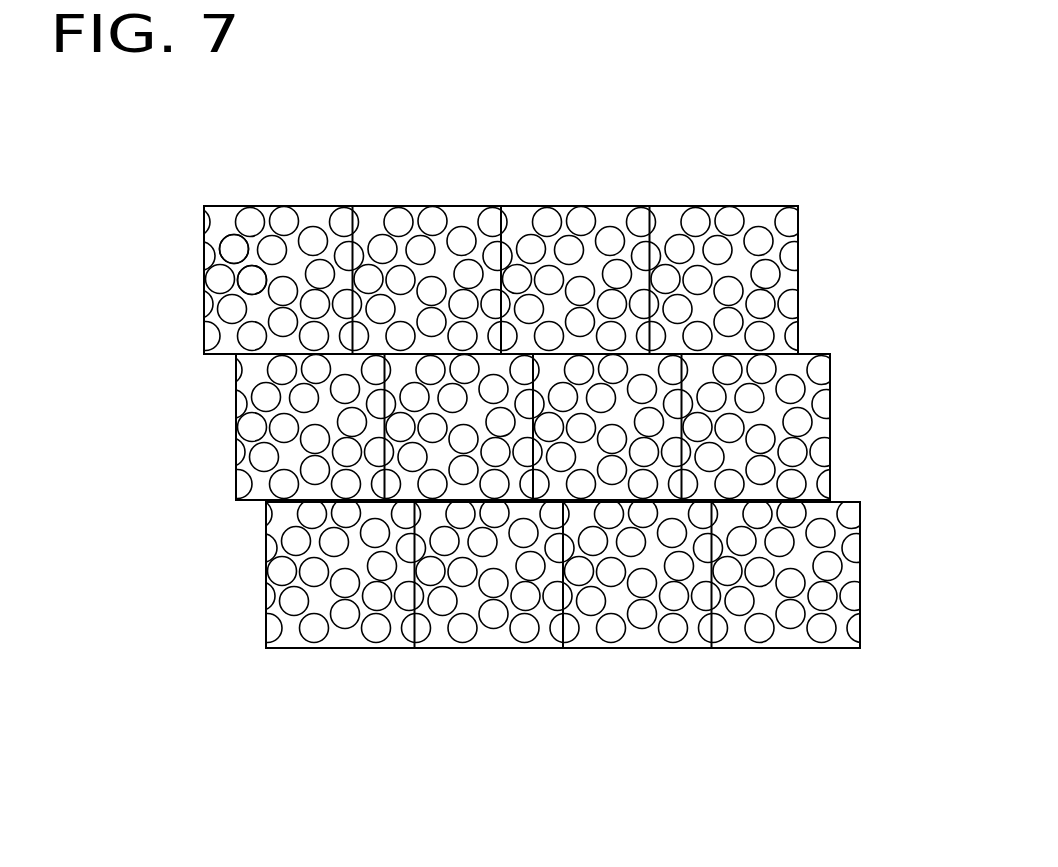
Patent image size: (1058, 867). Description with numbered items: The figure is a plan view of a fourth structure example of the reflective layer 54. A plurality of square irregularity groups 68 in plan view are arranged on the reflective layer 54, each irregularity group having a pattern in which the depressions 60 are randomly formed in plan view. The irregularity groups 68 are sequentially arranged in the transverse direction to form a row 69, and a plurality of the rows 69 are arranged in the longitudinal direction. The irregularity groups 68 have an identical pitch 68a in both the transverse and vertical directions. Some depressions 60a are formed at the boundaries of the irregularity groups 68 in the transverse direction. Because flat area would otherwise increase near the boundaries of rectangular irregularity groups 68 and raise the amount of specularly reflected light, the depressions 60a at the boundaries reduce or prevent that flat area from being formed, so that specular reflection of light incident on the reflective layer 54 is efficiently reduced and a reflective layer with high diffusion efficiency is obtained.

The reflective layer 54 is at (852, 254).
The depressions 60 is at (253, 270).
The depressions at boundaries 60a is at (702, 553).
The irregularity groups 68 is at (217, 298).
The pitch 68a is at (859, 503).
The row 69 is at (160, 558).